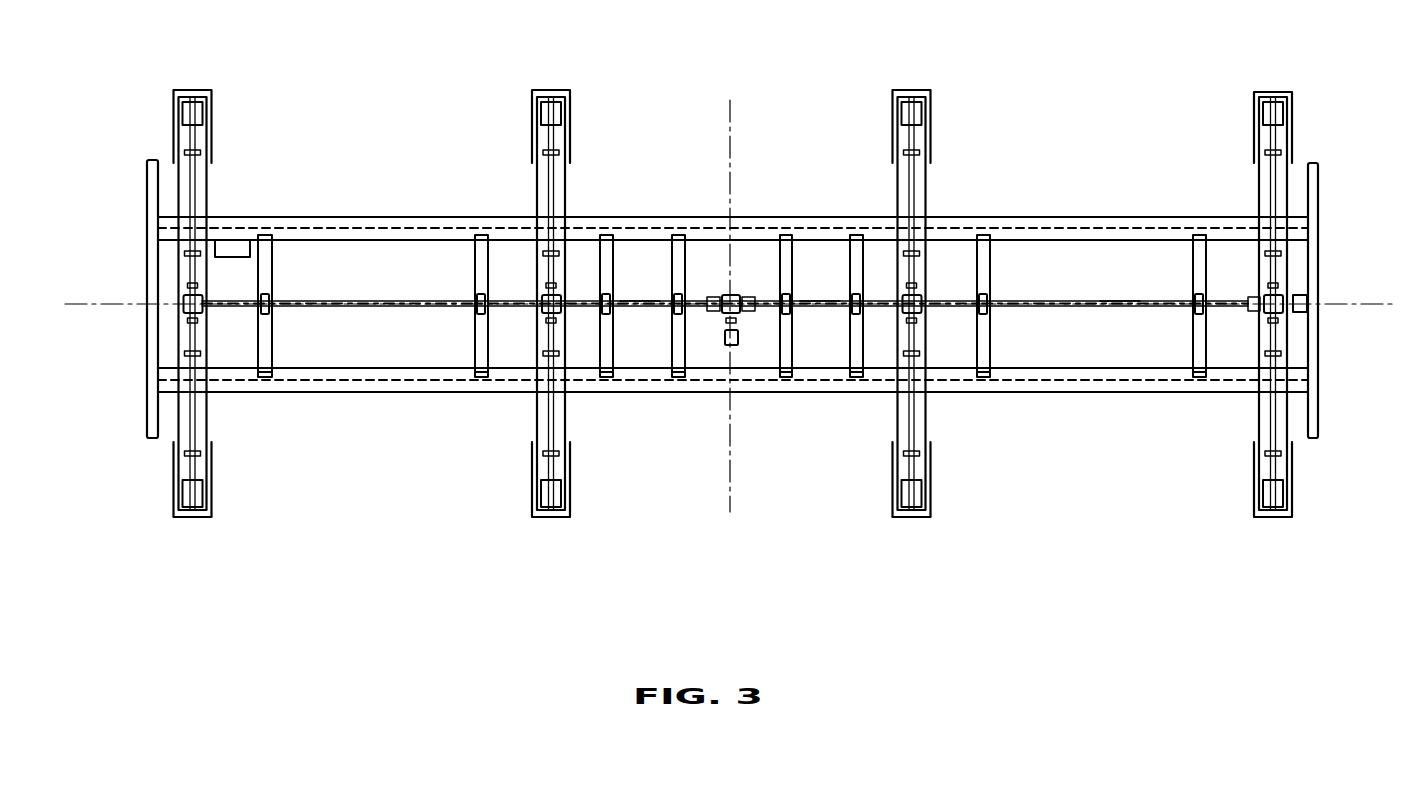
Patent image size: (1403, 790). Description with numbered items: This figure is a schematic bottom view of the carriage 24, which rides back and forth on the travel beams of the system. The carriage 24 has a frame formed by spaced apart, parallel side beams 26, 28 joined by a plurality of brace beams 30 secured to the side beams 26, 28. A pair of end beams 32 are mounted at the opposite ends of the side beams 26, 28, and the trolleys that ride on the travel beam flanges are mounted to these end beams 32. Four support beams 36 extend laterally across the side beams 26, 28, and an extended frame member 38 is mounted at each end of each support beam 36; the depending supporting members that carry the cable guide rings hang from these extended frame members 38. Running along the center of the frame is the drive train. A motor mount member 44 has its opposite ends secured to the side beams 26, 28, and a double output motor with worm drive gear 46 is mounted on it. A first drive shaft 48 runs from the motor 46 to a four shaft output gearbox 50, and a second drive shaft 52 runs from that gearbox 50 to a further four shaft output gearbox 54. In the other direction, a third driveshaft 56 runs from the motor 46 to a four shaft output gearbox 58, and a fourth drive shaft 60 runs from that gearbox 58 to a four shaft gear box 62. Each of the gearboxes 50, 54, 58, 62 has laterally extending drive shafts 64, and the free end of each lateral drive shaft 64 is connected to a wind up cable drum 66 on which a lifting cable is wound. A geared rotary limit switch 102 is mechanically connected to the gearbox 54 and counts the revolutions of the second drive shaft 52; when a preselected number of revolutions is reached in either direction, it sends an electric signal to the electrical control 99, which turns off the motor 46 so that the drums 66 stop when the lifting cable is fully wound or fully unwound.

The carriage 24 is at (375, 455).
The side beam 26 is at (1087, 222).
The side beam 28 is at (1088, 390).
The brace beam 30 is at (265, 253).
The end beam 32 is at (150, 197).
The support beam 36 is at (207, 197).
The extended frame member 38 is at (207, 118).
The motor mount member 44 is at (731, 254).
The double output motor with worm drive gear 46 is at (732, 312).
The first drive shaft 48 is at (658, 307).
The four shaft output gearbox 50 is at (545, 312).
The second drive shaft 52 is at (413, 312).
The four shaft output gearbox 54 is at (188, 308).
The third driveshaft 56 is at (822, 307).
The four shaft output gearbox 58 is at (905, 313).
The fourth drive shaft 60 is at (1122, 307).
The four shaft gear box 62 is at (1277, 312).
The laterally extending drive shaft 64 is at (193, 177).
The wind up cable drum 66 is at (190, 108).
The electrical control 99 is at (230, 247).
The geared rotary limit switch 102 is at (1300, 302).